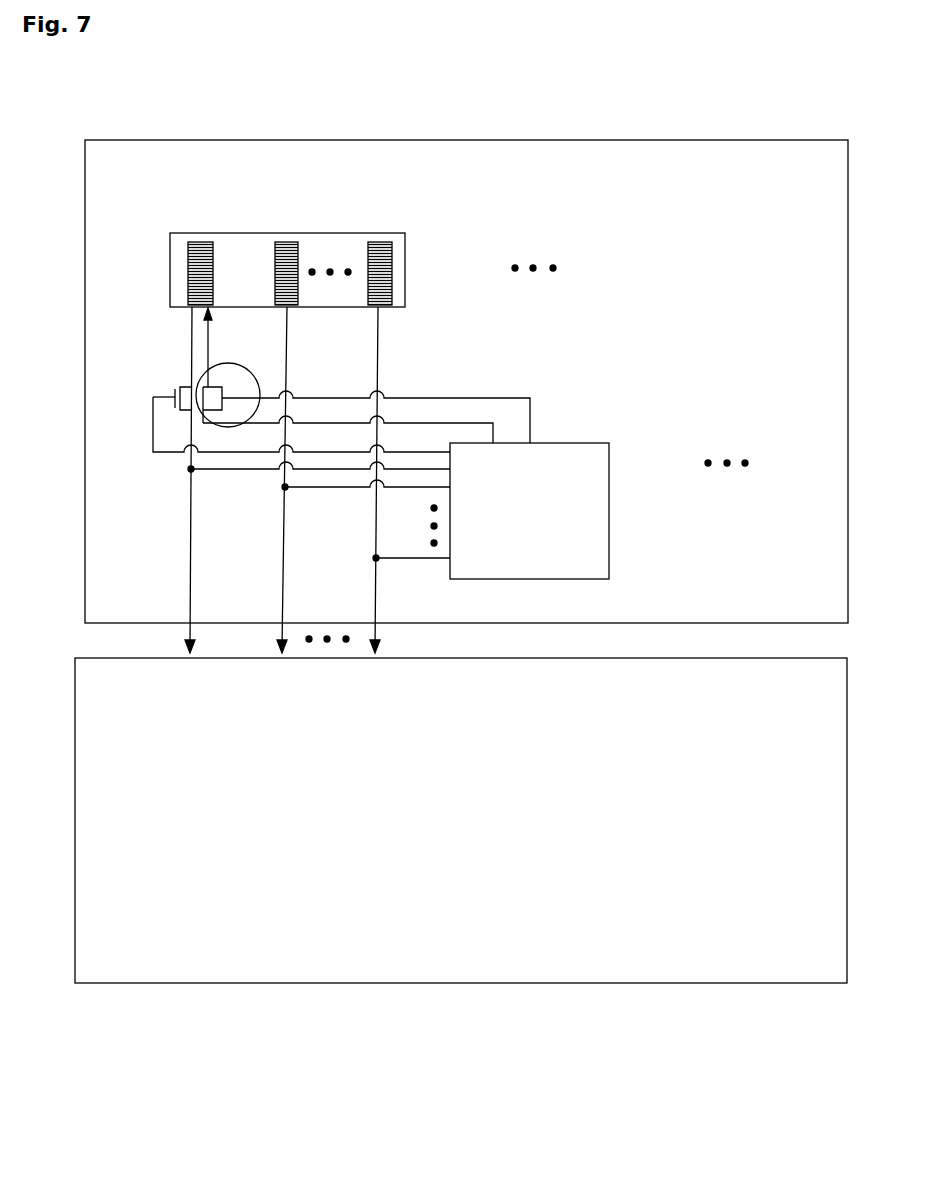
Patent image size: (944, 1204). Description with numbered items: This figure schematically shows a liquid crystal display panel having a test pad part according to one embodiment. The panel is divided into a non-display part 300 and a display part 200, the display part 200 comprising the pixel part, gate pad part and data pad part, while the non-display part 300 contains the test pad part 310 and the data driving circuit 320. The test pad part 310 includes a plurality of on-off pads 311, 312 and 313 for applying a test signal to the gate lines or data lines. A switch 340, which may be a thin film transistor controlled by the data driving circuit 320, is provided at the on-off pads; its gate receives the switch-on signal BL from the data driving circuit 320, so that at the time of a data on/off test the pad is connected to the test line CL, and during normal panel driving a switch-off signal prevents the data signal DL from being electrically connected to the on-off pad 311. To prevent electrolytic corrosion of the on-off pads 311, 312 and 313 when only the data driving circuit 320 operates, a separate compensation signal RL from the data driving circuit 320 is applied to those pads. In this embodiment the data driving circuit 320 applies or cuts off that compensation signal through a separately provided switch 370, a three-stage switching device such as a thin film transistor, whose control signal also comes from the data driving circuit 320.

The non-display part 300 is at (484, 140).
The display part 200 is at (528, 983).
The test pad part 310 is at (405, 265).
The on-off pad 311 is at (197, 233).
The on-off pad 312 is at (285, 233).
The on-off pad 313 is at (376, 233).
The data driving circuit 320 is at (565, 443).
The switch 340 is at (188, 385).
The switch 370 is at (225, 363).
The separate signal RL is at (376, 409).
The switch-on signal BL is at (286, 424).
The test line CL is at (301, 472).
The data signal DL is at (336, 489).